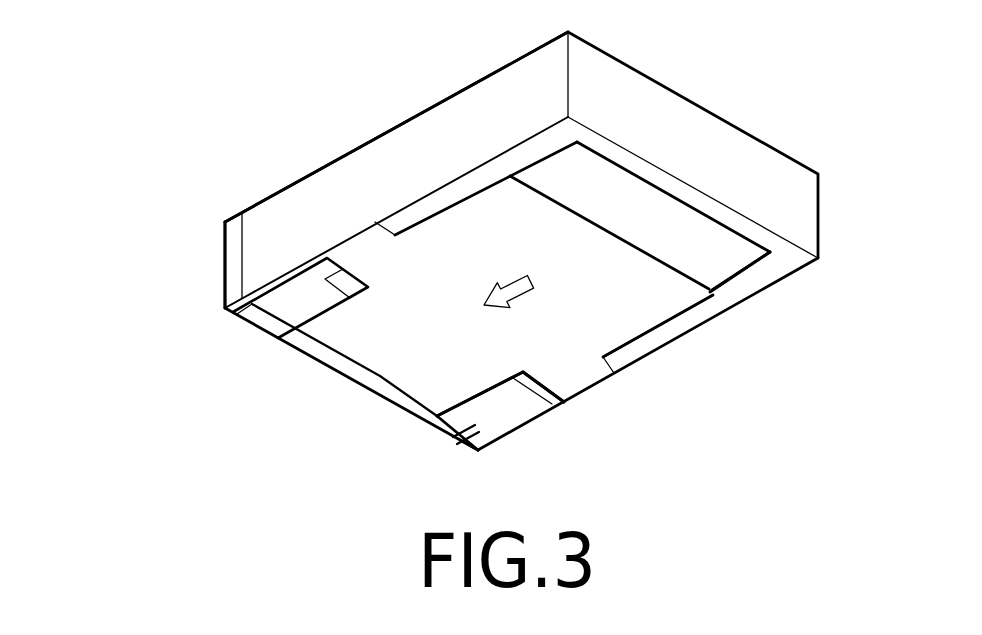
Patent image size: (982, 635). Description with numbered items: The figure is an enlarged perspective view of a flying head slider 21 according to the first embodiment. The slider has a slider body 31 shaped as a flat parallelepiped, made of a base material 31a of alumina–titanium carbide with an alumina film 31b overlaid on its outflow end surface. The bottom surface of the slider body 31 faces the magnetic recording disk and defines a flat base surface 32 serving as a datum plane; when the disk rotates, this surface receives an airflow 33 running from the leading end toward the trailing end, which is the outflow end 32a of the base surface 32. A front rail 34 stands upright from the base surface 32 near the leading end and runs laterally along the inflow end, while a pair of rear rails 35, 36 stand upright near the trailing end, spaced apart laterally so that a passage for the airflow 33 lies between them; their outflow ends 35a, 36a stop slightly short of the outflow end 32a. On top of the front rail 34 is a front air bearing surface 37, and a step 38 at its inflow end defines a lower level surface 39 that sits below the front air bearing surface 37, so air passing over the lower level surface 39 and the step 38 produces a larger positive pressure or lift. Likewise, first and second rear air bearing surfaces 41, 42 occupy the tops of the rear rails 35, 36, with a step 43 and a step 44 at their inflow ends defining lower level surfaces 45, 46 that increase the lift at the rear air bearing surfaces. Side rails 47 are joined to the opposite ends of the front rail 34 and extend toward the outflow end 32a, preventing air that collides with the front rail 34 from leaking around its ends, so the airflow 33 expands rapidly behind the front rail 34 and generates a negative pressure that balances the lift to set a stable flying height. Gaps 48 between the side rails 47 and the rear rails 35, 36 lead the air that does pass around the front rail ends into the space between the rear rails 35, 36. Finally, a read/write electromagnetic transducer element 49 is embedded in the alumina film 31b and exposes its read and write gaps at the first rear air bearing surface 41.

The flying head slider 21 is at (377, 133).
The slider body 31 is at (117, 153).
The base material 31a is at (255, 207).
The alumina film 31b is at (232, 218).
The base surface 32 is at (663, 334).
The outflow end of the base surface 32a is at (356, 385).
The airflow 33 is at (511, 278).
The front rail 34 is at (470, 184).
The rear rail 35 is at (484, 393).
The outflow end of the rear rail 35a is at (474, 454).
The rear rail 36 is at (316, 314).
The outflow end of the rear rail 36a is at (258, 330).
The front air bearing surface 37 is at (642, 233).
The step 38 is at (681, 199).
The lower level surface 39 is at (758, 272).
The first rear air bearing surface 41 is at (503, 421).
The second rear air bearing surface 42 is at (227, 313).
The step 43 is at (556, 398).
The step 44 is at (348, 272).
The lower level surface 45 is at (528, 374).
The lower level surface 46 is at (317, 266).
The side rail 47 is at (393, 213).
The gap 48 is at (348, 237).
The read/write electromagnetic transducer element 49 is at (455, 440).